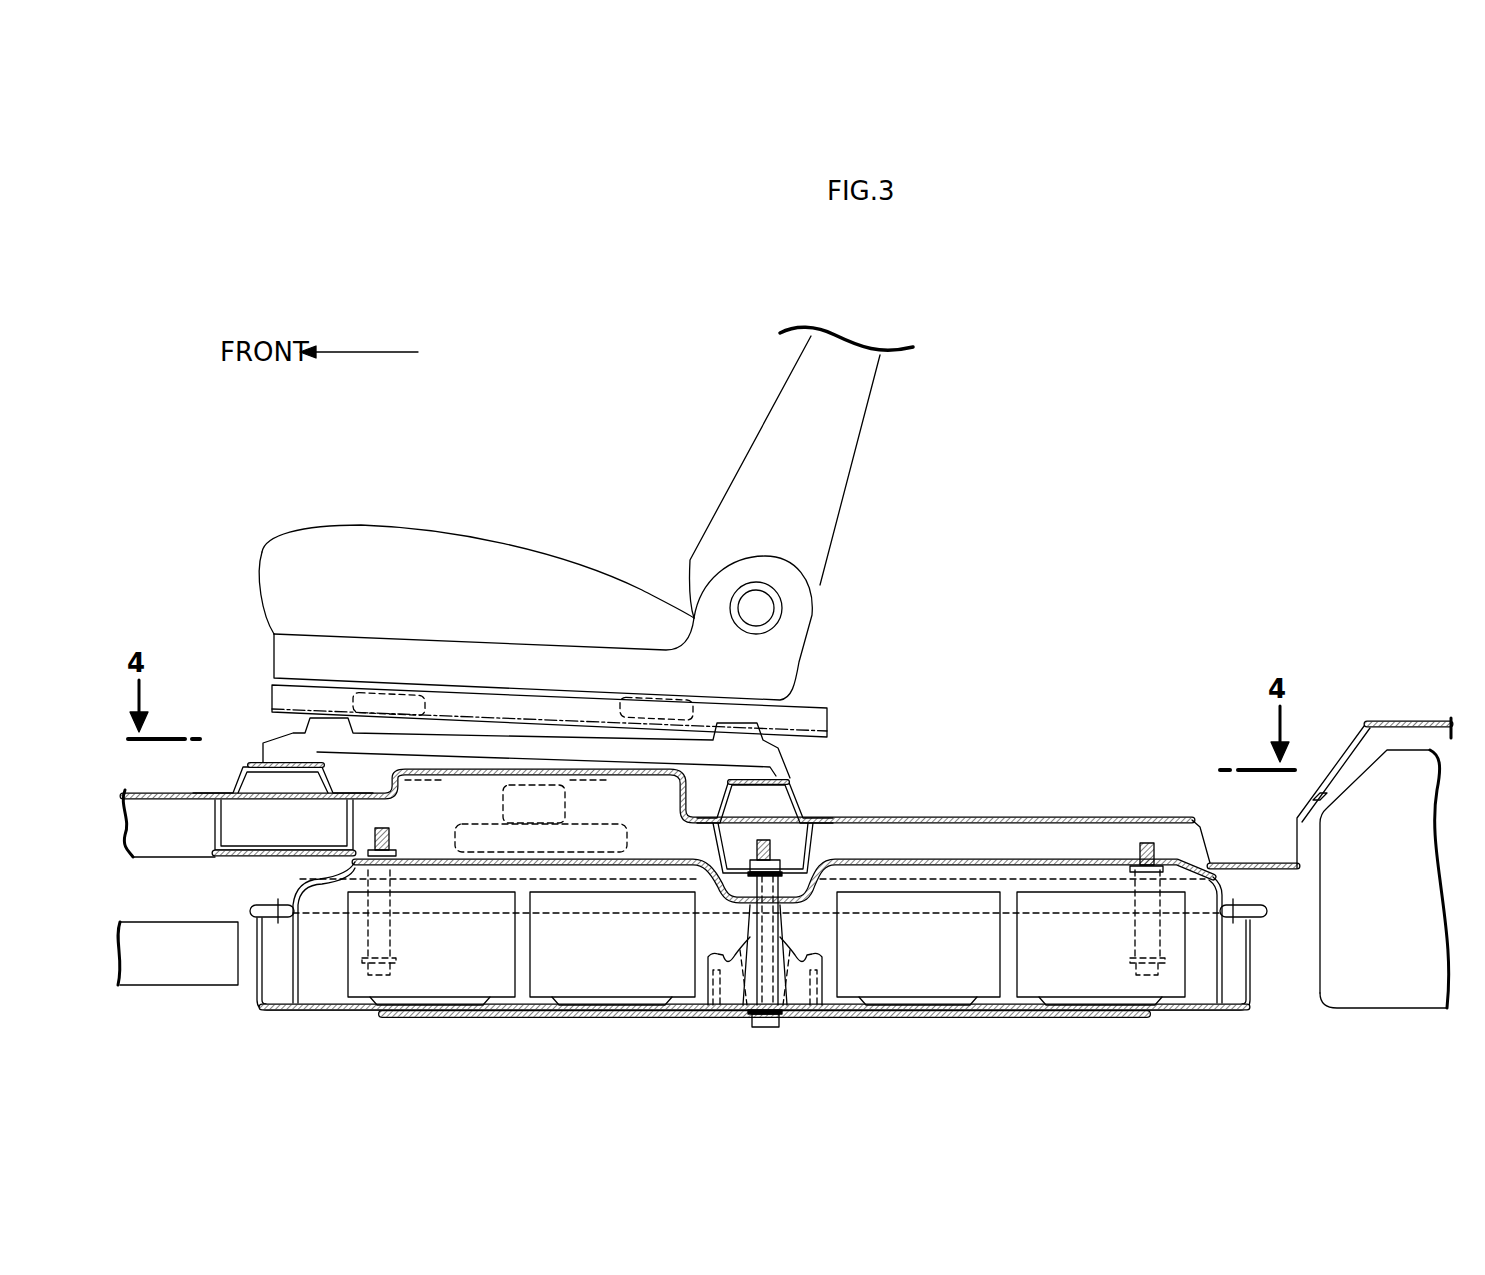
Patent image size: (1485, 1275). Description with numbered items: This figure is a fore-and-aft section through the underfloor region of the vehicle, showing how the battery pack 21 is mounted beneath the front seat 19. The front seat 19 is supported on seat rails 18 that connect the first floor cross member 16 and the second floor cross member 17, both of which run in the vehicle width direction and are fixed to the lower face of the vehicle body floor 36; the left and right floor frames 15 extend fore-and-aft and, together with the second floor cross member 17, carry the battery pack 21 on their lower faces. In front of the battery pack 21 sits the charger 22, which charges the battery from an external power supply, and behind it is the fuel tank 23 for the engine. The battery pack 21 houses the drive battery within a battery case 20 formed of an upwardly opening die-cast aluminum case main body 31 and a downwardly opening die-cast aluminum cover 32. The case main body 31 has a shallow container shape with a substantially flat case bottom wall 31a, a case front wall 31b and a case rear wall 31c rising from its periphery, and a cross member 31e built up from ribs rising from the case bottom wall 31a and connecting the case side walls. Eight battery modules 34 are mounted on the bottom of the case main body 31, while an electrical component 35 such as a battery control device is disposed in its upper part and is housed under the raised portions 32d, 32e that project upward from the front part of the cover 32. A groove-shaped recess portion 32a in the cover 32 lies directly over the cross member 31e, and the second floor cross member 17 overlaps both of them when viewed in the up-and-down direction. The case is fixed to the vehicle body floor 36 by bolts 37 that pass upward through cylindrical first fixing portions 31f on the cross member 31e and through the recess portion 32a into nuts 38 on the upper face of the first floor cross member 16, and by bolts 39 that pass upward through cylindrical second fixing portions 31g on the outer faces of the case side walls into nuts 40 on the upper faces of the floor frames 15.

The floor frame 15 is at (174, 849).
The first floor cross member 16 is at (244, 860).
The second floor cross member 17 is at (817, 849).
The seat rail 18 is at (508, 753).
The front seat 19 is at (590, 522).
The battery case 20 is at (1043, 760).
The battery pack 21 is at (568, 1028).
The charger 22 is at (162, 975).
The fuel tank 23 is at (1390, 988).
The case main body 31 is at (1068, 985).
The case bottom wall 31a is at (887, 1015).
The case front wall 31b is at (260, 985).
The case rear wall 31c is at (1253, 985).
The cross member 31e is at (805, 940).
The first fixing portion 31f is at (750, 924).
The second fixing portion 31g is at (367, 928).
The cover 32 is at (934, 850).
The recess portion 32a is at (795, 885).
The raised portion 32d is at (590, 778).
The raised portion 32e is at (450, 777).
The battery module 34 is at (445, 960).
The electrical component 35 is at (534, 778).
The vehicle body floor 36 is at (913, 817).
The bolt 37 is at (765, 1027).
The nut 38 is at (750, 857).
The bolt 39 is at (368, 975).
The nut 40 is at (393, 843).